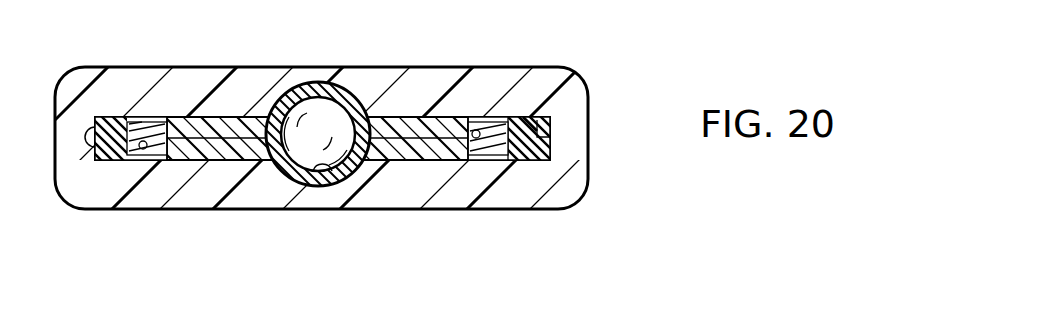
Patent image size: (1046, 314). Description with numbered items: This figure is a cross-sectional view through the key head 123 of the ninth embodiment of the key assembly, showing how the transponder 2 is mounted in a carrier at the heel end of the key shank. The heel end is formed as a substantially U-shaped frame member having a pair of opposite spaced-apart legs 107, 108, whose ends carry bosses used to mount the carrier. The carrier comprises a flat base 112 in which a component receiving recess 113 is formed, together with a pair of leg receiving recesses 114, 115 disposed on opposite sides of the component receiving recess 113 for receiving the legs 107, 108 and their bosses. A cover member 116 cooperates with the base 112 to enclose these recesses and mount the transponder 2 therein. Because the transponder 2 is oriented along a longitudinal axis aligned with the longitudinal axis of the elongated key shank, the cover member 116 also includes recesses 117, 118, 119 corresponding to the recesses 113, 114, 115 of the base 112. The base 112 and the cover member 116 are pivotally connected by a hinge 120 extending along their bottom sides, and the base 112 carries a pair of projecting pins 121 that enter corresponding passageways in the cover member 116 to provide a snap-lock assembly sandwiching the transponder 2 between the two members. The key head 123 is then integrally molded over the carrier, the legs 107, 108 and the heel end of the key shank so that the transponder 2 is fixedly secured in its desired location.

The transponder 2 is at (318, 103).
The leg 107 is at (500, 150).
The leg 108 is at (170, 137).
The base 112 is at (403, 152).
The component receiving recess 113 is at (320, 168).
The leg receiving recess 114 is at (467, 147).
The leg receiving recess 115 is at (140, 147).
The cover member 116 is at (213, 118).
The recess 117 is at (343, 112).
The recess 118 is at (477, 127).
The recess 119 is at (130, 127).
The hinge 120 is at (90, 137).
The projecting pin 121 is at (535, 117).
The key head 123 is at (580, 142).